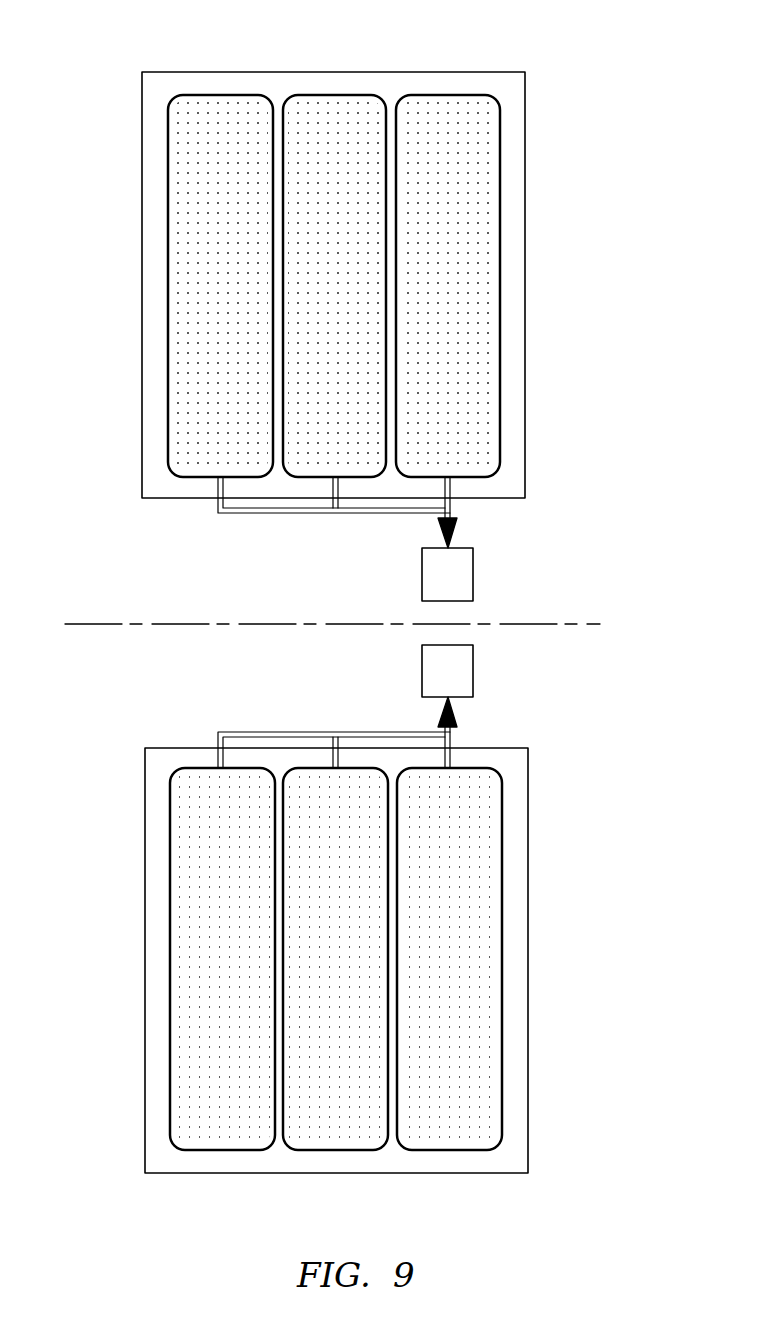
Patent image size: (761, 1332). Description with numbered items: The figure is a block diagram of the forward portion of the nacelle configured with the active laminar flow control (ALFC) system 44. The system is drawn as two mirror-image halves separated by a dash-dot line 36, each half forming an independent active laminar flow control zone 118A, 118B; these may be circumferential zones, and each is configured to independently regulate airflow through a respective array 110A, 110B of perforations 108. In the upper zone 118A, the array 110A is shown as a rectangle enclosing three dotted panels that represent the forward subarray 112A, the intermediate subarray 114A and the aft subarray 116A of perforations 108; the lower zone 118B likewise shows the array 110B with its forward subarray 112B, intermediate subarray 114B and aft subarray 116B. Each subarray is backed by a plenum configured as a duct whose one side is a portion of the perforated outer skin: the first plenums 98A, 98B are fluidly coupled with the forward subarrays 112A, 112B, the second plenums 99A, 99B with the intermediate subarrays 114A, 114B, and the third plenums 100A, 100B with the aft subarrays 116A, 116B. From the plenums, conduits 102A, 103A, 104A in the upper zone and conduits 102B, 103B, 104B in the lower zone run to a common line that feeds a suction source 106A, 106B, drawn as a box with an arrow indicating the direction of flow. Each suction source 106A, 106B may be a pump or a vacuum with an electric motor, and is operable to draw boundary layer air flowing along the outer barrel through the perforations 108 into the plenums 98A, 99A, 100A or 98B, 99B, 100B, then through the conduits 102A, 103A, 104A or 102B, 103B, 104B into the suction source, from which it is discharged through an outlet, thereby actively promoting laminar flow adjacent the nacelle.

The plane of symmetry / dividing line 36 is at (577, 624).
The active laminar flow control (ALFC) system 44 is at (581, 213).
The first plenum 98A is at (168, 423).
The first plenum 98B is at (170, 833).
The second plenum 99A is at (345, 100).
The second plenum 99B is at (328, 1152).
The third plenum 100A is at (502, 425).
The third plenum 100B is at (502, 1085).
The conduit 102A is at (220, 490).
The conduit 102B is at (218, 744).
The conduit 103A is at (336, 490).
The conduit 103B is at (335, 760).
The conduit 104A is at (450, 488).
The conduit 104B is at (453, 742).
The suction source 106A is at (473, 570).
The suction source 106B is at (474, 667).
The perforations 108 is at (330, 242).
The array of perforations 110A is at (142, 342).
The array of perforations 110B is at (145, 1062).
The forward subarray 112A is at (162, 286).
The forward subarray 112B is at (171, 1002).
The intermediate subarray 114A is at (327, 244).
The intermediate subarray 114B is at (357, 998).
The aft subarray 116A is at (508, 283).
The aft subarray 116B is at (513, 970).
The active laminar flow control zone 118A is at (592, 516).
The active laminar flow control zone 118B is at (590, 762).